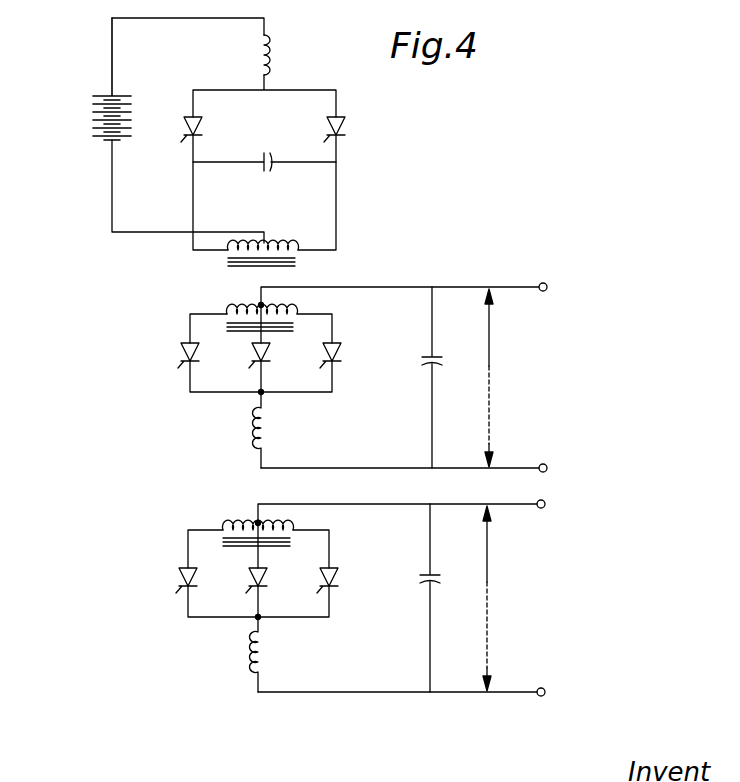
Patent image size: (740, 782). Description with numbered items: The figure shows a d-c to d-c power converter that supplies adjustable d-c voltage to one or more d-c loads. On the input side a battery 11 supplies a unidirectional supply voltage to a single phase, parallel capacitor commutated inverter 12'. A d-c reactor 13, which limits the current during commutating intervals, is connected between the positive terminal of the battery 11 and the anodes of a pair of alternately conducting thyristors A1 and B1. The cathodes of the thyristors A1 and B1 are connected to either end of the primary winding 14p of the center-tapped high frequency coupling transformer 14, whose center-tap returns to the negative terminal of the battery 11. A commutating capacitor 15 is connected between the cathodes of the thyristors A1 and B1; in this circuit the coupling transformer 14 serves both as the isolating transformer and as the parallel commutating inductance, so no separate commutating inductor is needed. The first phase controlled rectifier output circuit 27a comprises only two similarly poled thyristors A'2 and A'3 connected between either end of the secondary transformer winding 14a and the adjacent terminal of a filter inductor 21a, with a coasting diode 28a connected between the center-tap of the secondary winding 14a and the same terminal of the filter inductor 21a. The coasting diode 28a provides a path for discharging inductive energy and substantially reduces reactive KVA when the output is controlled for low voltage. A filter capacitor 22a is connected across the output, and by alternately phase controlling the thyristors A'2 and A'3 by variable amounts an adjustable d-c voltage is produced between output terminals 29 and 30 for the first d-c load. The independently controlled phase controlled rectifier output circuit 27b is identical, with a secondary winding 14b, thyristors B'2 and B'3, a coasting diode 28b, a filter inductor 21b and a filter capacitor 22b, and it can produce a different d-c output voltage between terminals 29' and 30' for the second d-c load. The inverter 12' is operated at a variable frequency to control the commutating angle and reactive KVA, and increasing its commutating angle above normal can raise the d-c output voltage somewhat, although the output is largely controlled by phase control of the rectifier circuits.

The battery 11 is at (97, 137).
The parallel capacitor commutated inverter 12' is at (220, 147).
The d-c reactor 13 is at (270, 63).
The high frequency coupling transformer 14 is at (300, 258).
The primary winding 14p is at (268, 244).
The commutating capacitor 15 is at (265, 157).
The thyristor A1 is at (207, 122).
The thyristor B1 is at (354, 129).
The first phase controlled rectifier output circuit 27a is at (339, 363).
The secondary transformer winding 14a is at (232, 308).
The thyristor A'2 is at (162, 348).
The thyristor A'3 is at (353, 348).
The coasting diode 28a is at (291, 358).
The filter capacitor 22a is at (434, 356).
The filter inductor 21a is at (266, 440).
The output terminal 29 is at (557, 273).
The output terminal 30 is at (560, 453).
The phase controlled rectifier output circuit 27b is at (332, 591).
The secondary transformer winding 14b is at (252, 524).
The thyristor B'2 is at (159, 572).
The thyristor B'3 is at (350, 572).
The coasting diode 28b is at (262, 592).
The filter capacitor 22b is at (432, 574).
The filter inductor 21b is at (263, 664).
The output terminal 29' is at (560, 499).
The output terminal 30' is at (555, 679).